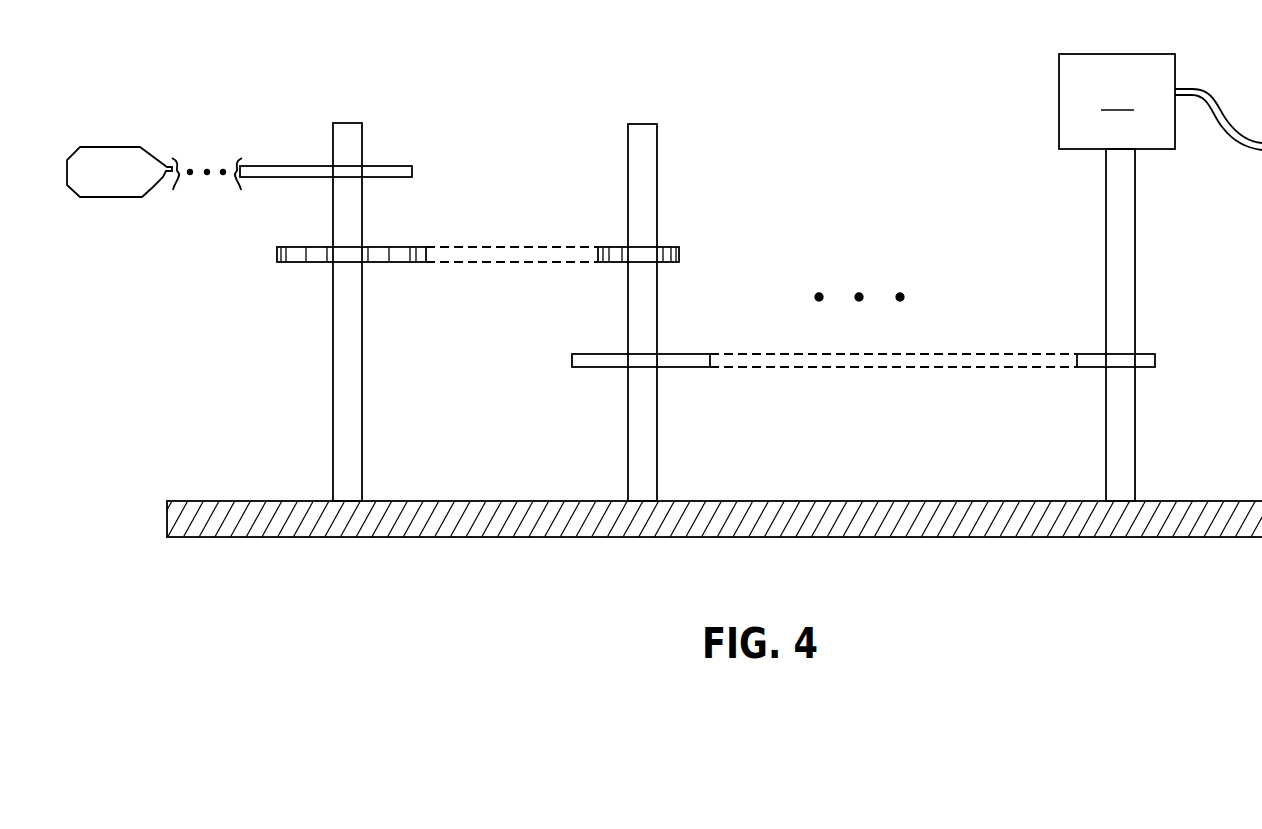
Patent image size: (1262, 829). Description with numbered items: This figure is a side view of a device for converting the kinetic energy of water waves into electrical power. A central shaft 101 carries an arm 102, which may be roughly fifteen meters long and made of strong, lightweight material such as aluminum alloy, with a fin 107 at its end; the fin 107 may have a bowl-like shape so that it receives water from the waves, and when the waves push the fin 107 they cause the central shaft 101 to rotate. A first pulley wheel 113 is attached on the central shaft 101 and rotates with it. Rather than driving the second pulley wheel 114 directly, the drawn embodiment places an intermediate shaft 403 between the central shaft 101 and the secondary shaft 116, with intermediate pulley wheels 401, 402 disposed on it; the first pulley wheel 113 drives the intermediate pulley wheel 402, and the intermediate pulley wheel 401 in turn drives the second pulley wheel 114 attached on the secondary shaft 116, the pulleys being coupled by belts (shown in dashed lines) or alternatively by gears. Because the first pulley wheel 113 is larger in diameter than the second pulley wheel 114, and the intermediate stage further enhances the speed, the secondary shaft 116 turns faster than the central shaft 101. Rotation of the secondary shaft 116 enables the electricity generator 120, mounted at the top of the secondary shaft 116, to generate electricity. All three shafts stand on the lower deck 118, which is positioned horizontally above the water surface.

The central shaft 101 is at (362, 435).
The arm 102 is at (271, 165).
The fin 107 is at (122, 147).
The first pulley wheel 113 is at (297, 263).
The second pulley wheel 114 is at (1145, 369).
The secondary shaft 116 is at (1135, 220).
The lower deck 118 is at (777, 537).
The electricity generator 120 is at (1160, 102).
The intermediate pulley wheel 401 is at (692, 369).
The intermediate pulley wheel 402 is at (682, 252).
The intermediate shaft 403 is at (658, 465).